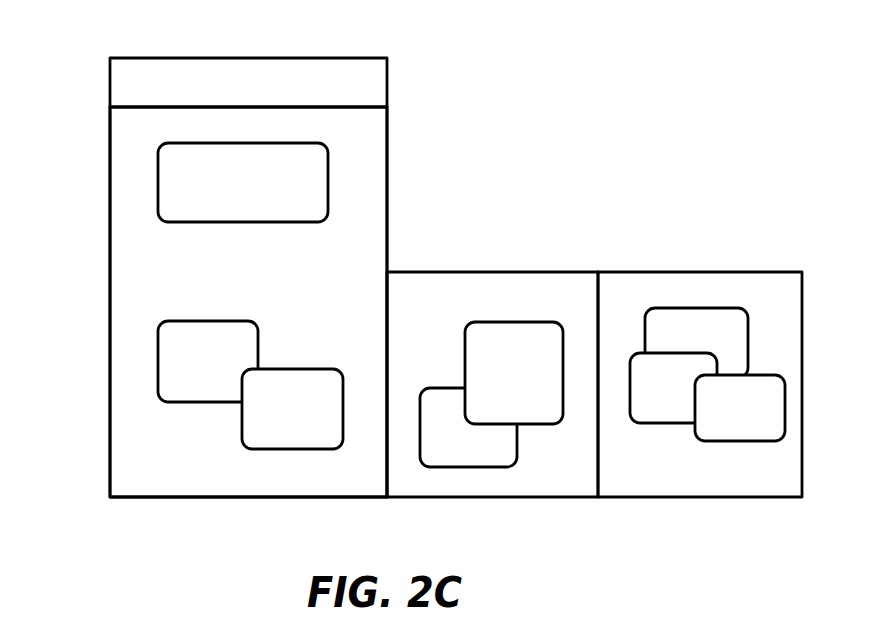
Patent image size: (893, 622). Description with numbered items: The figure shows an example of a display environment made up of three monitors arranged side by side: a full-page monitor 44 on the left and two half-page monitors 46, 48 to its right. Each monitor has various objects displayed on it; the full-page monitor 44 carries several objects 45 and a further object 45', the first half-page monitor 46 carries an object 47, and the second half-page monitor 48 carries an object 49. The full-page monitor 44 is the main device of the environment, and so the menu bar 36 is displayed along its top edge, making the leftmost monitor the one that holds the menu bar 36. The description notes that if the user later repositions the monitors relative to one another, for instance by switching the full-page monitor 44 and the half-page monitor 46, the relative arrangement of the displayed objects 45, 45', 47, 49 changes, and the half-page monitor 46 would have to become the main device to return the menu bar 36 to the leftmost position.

The menu bar 36 is at (260, 58).
The full-page monitor 44 is at (373, 183).
The objects 45 is at (182, 388).
The object 45' is at (172, 182).
The half-page monitor 46 is at (515, 283).
The object 47 is at (482, 457).
The half-page monitor 48 is at (742, 282).
The object 49 is at (738, 428).